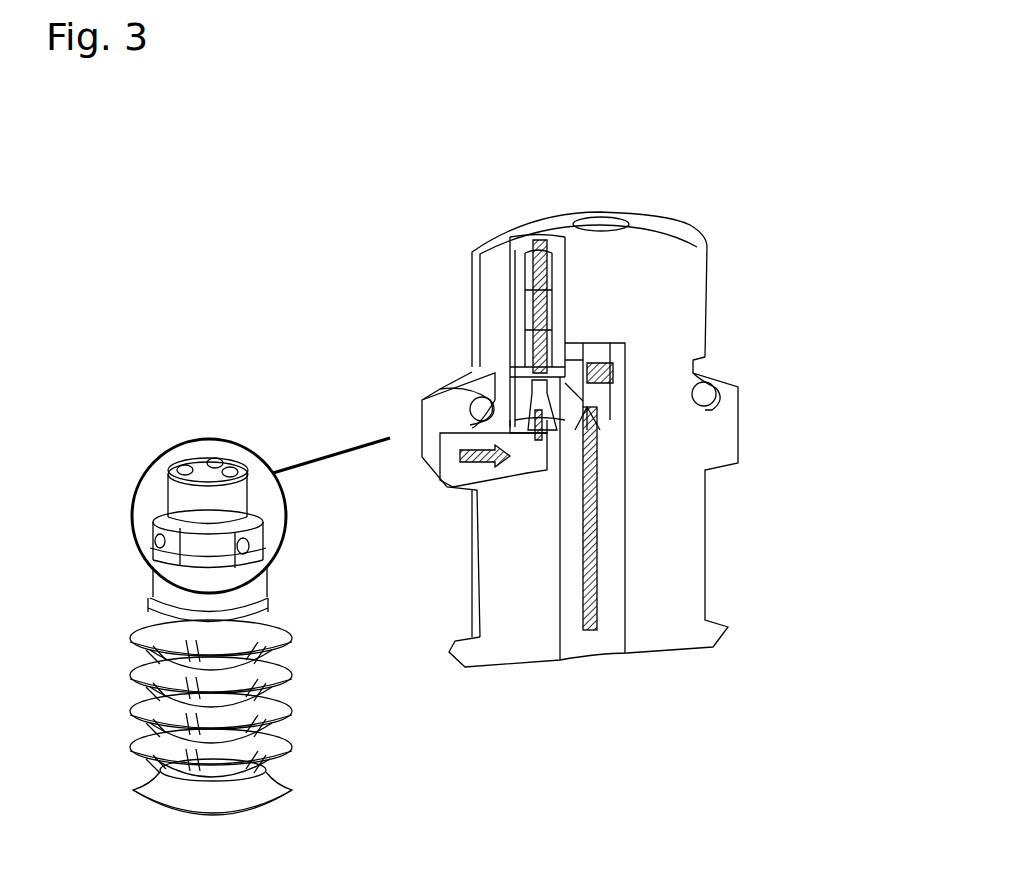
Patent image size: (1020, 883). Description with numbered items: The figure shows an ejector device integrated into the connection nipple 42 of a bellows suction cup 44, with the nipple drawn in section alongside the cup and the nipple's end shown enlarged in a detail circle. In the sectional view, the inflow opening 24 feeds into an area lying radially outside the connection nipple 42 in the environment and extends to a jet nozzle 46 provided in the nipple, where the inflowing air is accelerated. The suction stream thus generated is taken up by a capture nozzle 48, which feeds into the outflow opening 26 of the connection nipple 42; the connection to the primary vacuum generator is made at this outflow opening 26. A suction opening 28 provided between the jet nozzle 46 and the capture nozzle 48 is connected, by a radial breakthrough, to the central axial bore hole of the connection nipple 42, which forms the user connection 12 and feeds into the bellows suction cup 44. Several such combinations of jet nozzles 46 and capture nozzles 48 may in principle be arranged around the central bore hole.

The user connection 12 is at (665, 632).
The inflow opening 24 is at (450, 463).
The outflow opening 26 is at (520, 247).
The suction opening 28 is at (552, 380).
The connection nipple 42 is at (160, 447).
The bellows suction cup 44 is at (300, 692).
The jet nozzle 46 is at (515, 425).
The capture nozzle 48 is at (558, 263).